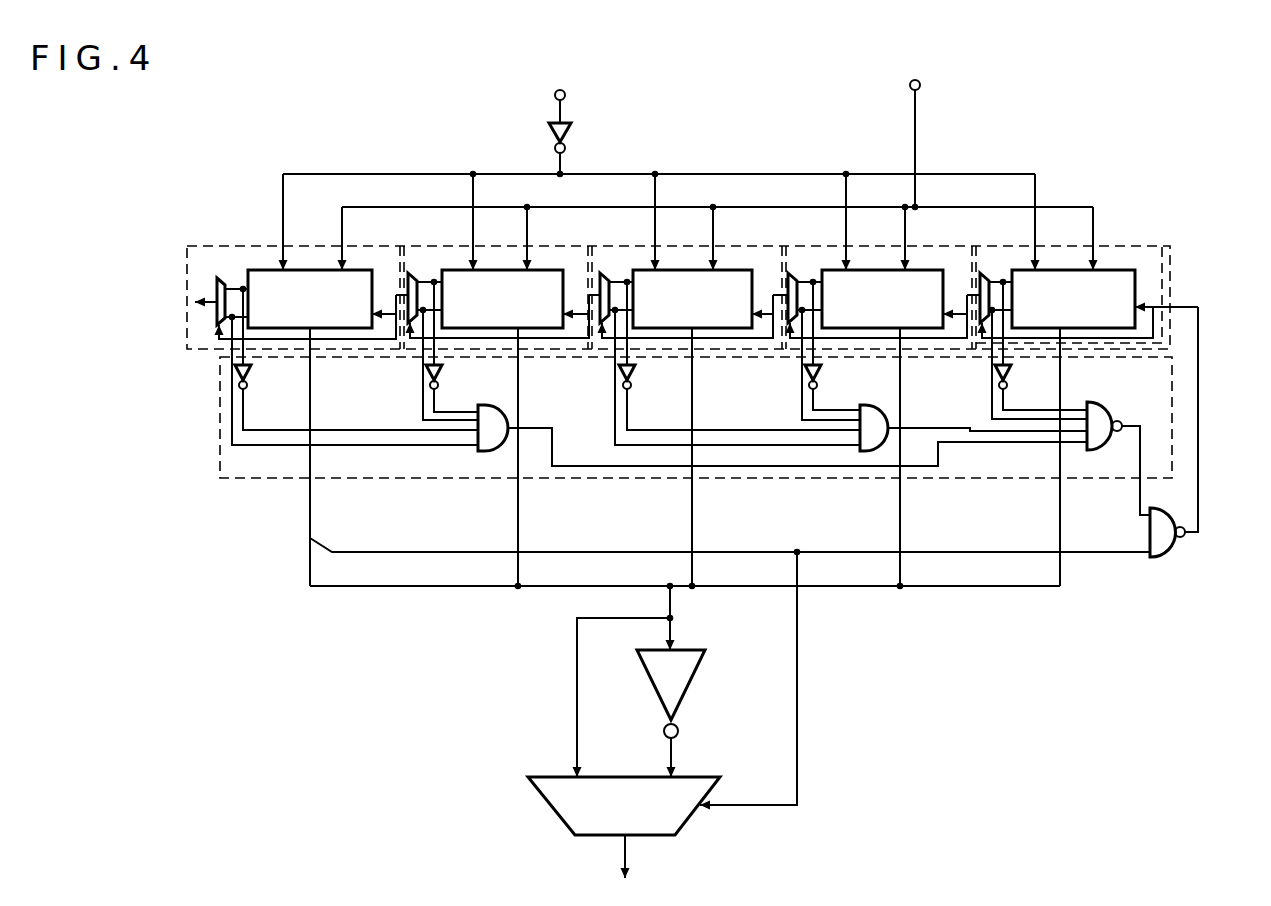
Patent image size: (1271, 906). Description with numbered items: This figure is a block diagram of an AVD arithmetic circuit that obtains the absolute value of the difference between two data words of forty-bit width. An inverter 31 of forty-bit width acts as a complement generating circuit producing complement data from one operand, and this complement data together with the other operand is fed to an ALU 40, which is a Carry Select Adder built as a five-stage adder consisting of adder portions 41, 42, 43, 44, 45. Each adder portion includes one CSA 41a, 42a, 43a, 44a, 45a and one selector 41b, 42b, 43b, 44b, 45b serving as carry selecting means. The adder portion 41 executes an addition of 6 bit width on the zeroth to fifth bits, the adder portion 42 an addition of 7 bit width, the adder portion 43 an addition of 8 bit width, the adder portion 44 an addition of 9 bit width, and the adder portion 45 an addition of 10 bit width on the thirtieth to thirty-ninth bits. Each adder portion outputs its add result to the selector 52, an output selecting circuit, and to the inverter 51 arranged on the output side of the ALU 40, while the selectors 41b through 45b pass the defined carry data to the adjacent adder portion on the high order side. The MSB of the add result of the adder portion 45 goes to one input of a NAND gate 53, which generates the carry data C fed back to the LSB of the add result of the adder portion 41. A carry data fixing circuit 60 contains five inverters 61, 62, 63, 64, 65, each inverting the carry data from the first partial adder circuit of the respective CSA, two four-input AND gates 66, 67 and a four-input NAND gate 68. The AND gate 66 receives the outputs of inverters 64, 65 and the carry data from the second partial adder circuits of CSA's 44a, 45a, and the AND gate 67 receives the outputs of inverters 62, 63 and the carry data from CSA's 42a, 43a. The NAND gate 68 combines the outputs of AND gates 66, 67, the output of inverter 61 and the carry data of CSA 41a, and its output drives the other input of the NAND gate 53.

The ALU 40 is at (555, 118).
The inverter 31 is at (580, 128).
The 10-bit width 10 is at (360, 180).
The 9-bit width 9 is at (468, 198).
The 8-bit width 8 is at (650, 198).
The 7-bit width 7 is at (841, 198).
The 6-bit width 6 is at (1030, 193).
The adder portion 45 is at (301, 276).
The CSA 45a is at (308, 268).
The selector 45b is at (217, 277).
The adder portion 44 is at (502, 279).
The CSA 44a is at (497, 268).
The selector 44b is at (408, 276).
The adder portion 43 is at (693, 279).
The CSA 43a is at (687, 268).
The selector 43b is at (600, 276).
The adder portion 42 is at (883, 279).
The CSA 42a is at (877, 268).
The selector 42b is at (790, 276).
The adder portion 41 is at (1066, 265).
The CSA 41a is at (1063, 268).
The selector 41b is at (982, 276).
The carry data fixing circuit 60 is at (696, 415).
The inverter 61 is at (1013, 372).
The inverter 62 is at (826, 372).
The inverter 63 is at (638, 372).
The inverter 64 is at (445, 372).
The inverter 65 is at (252, 372).
The 4-input AND gate 66 is at (478, 450).
The 4-input AND gate 67 is at (895, 412).
The 4-input NAND gate 68 is at (1100, 404).
The NAND gate 53 is at (1163, 560).
The inverter 51 is at (692, 678).
The selector 52 is at (712, 795).
The carry data C is at (1199, 415).
The MSB of the add result MSB is at (428, 552).